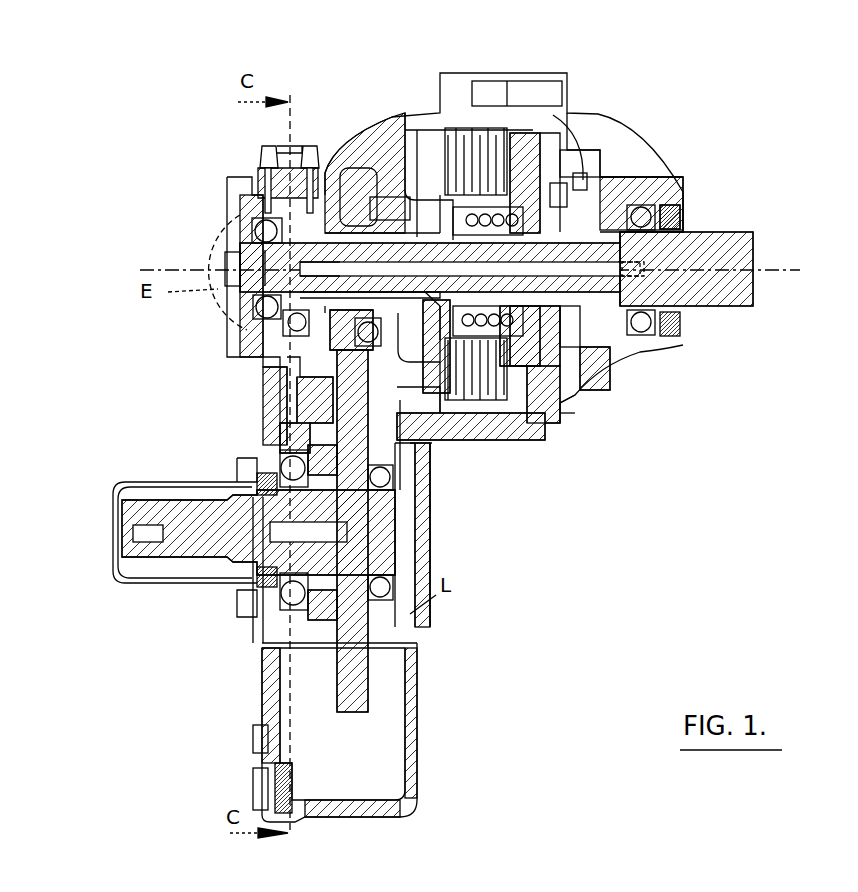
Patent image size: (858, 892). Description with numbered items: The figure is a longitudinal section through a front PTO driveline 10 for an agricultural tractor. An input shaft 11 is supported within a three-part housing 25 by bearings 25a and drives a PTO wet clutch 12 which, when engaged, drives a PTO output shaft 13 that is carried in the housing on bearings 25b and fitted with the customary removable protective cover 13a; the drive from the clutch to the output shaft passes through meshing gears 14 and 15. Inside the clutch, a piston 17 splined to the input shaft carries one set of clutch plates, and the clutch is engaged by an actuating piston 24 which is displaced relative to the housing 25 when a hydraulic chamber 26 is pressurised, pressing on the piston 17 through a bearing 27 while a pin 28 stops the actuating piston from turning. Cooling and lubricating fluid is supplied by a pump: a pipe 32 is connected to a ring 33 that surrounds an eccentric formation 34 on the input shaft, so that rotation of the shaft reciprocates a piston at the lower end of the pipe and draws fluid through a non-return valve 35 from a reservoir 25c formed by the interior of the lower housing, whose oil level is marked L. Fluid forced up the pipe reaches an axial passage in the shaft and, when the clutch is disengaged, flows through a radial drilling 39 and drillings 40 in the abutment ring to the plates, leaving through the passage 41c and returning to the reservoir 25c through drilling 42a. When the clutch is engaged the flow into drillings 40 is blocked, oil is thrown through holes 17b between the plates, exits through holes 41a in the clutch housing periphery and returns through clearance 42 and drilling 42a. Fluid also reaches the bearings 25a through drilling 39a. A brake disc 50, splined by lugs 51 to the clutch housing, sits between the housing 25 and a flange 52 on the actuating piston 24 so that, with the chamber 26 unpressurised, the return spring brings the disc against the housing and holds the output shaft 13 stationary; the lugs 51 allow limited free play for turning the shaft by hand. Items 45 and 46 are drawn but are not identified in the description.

The front PTO driveline 10 is at (533, 447).
The input shaft 11 is at (718, 290).
The PTO wet clutch 12 is at (555, 405).
The PTO output shaft 13 is at (195, 525).
The removable protective cover 13a is at (125, 482).
The gear 14 is at (405, 162).
The gear 15 is at (352, 662).
The piston 17 is at (560, 240).
The holes 17b is at (660, 262).
The actuating piston 24 is at (630, 190).
The housing 25 is at (595, 165).
The bearings 25a is at (268, 235).
The bearings 25b is at (290, 466).
The reservoir 25c is at (385, 758).
The hydraulic chamber 26 is at (610, 340).
The bearing 27 is at (680, 200).
The pin 28 is at (580, 170).
The pipe 32 is at (292, 400).
The ring 33 is at (280, 245).
The eccentric formation 34 is at (235, 275).
The non-return valve 35 is at (566, 232).
The radial drilling 39 is at (460, 295).
The drilling 39a is at (635, 278).
The drillings 40 is at (452, 300).
The holes 41a is at (470, 128).
The passage 41c is at (460, 128).
The clearance 42 is at (458, 420).
The drilling 42a is at (420, 440).
The bore 45 is at (350, 260).
The piston 46 is at (460, 232).
The brake disc 50 is at (598, 410).
The lugs 51 is at (565, 412).
The flange 52 is at (605, 380).